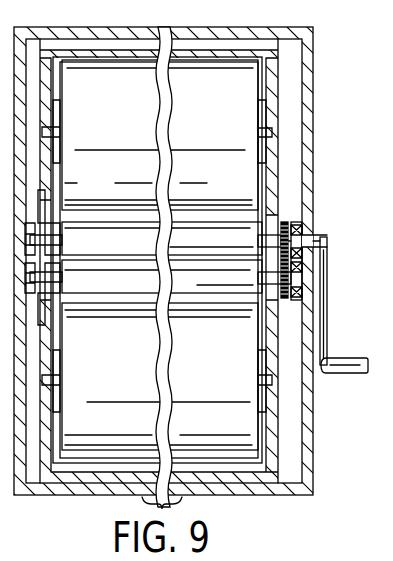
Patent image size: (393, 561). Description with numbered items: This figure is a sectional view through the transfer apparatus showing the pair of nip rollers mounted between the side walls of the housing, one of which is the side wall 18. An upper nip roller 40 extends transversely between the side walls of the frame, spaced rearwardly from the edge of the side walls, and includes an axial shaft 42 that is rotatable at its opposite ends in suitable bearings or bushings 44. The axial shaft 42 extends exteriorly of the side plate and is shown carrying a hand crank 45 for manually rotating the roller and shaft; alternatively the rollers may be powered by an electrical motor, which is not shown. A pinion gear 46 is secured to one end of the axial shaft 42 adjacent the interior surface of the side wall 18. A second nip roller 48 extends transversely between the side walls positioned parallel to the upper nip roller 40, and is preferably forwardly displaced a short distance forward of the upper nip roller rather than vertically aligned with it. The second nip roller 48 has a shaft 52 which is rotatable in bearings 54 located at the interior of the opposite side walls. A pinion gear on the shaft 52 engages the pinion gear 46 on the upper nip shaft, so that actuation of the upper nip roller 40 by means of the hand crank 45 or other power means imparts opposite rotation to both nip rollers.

The side wall 18 is at (315, 123).
The upper nip roller 40 is at (98, 245).
The axial shaft 42 is at (266, 238).
The bearings or bushings 44 is at (300, 232).
The hand crank 45 is at (328, 323).
The pinion gear 46 is at (285, 223).
The second nip roller 48 is at (93, 283).
The shaft 52 is at (263, 285).
The bearings 54 is at (298, 293).